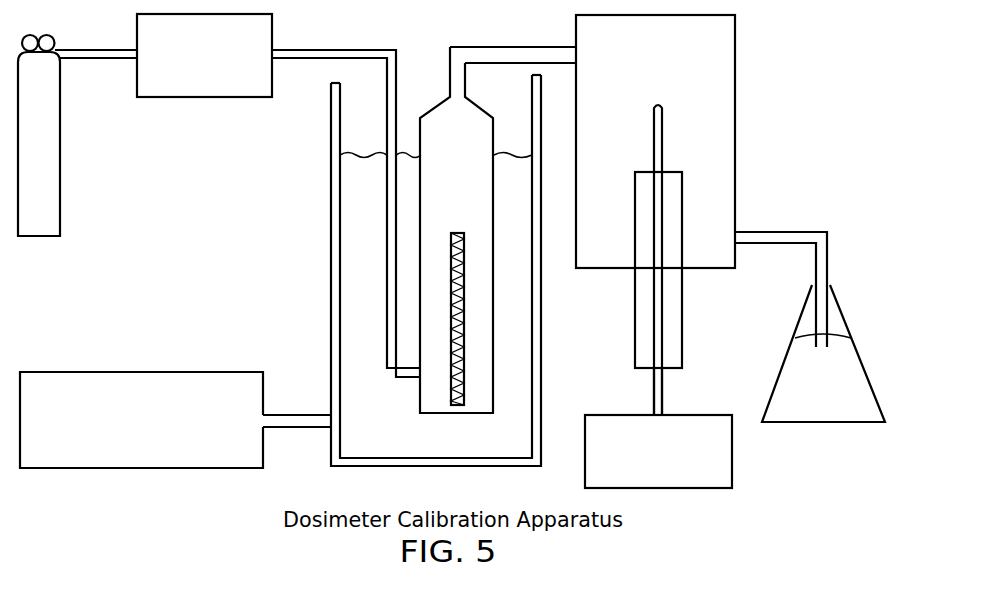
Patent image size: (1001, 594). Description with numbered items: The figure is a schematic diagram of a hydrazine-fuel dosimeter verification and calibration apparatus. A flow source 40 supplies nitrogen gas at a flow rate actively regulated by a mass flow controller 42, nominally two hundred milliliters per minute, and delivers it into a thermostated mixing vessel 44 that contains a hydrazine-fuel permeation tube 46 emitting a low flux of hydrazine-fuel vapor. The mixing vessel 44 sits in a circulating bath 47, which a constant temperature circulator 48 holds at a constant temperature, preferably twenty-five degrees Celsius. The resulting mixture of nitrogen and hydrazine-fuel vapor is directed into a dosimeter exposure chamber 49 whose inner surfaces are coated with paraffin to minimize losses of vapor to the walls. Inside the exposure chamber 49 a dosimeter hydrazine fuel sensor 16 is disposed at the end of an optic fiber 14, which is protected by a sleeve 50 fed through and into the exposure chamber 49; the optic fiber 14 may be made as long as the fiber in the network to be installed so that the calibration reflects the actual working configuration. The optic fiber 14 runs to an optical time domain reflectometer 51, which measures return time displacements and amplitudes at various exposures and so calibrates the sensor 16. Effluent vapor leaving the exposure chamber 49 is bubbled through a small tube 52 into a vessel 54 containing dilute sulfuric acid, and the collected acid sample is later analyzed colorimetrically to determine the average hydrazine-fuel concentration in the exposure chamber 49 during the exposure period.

The optic fiber 14 is at (663, 407).
The dosimeter hydrazine fuel sensor 16 is at (663, 143).
The flow source 40 is at (61, 212).
The mass flow controller 42 is at (185, 97).
The thermostated mixing vessel 44 is at (498, 230).
The hydrazine-fuel permeation tube 46 is at (451, 248).
The circulating bath 47 is at (329, 254).
The constant temperature circulator 48 is at (115, 372).
The dosimeter exposure chamber 49 is at (735, 58).
The sleeve 50 is at (683, 342).
The optical time domain reflectometer 51 is at (628, 415).
The small tube 52 is at (757, 228).
The vessel 54 is at (843, 316).